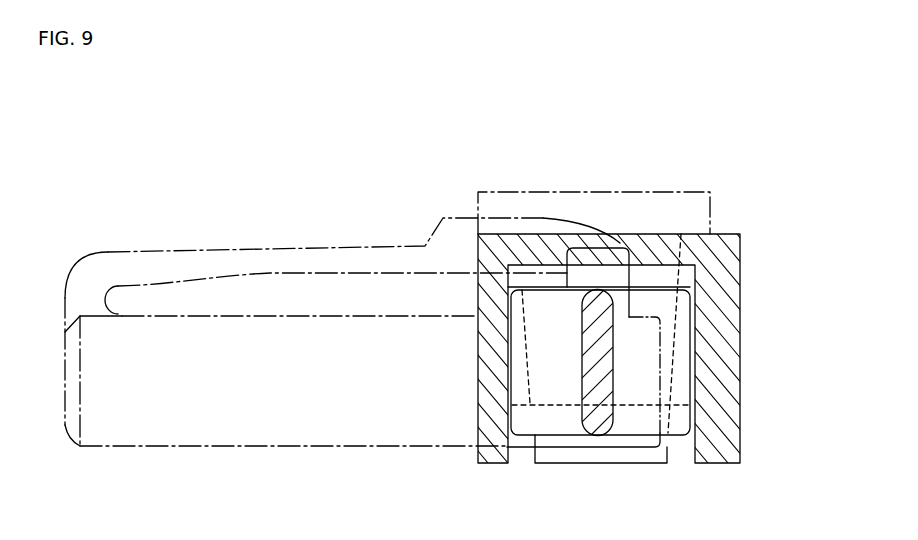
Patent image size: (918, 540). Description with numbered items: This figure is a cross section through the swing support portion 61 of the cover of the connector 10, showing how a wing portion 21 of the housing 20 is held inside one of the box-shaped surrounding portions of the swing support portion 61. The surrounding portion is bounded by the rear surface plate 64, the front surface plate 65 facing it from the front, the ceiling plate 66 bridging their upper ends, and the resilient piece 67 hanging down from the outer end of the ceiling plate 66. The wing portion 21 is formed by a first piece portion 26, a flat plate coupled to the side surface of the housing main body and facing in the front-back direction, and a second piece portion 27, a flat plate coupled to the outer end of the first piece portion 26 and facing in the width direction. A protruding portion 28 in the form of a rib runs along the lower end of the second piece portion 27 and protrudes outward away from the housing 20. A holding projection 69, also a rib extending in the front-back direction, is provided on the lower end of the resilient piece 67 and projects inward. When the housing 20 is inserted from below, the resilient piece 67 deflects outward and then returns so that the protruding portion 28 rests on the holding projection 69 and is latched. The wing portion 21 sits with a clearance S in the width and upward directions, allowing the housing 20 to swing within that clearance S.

The connector 10 is at (512, 115).
The housing 20 is at (300, 450).
The wing portion 21 is at (665, 290).
The first piece portion 26 is at (598, 310).
The second piece portion 27 is at (677, 308).
The protruding portion 28 is at (637, 407).
The swing support portion 61 is at (740, 264).
The rear surface plate 64 is at (724, 457).
The front surface plate 65 is at (494, 457).
The ceiling plate 66 is at (538, 242).
The resilient piece 67 is at (612, 465).
The holding projection 69 is at (565, 462).
The clearance S is at (697, 452).